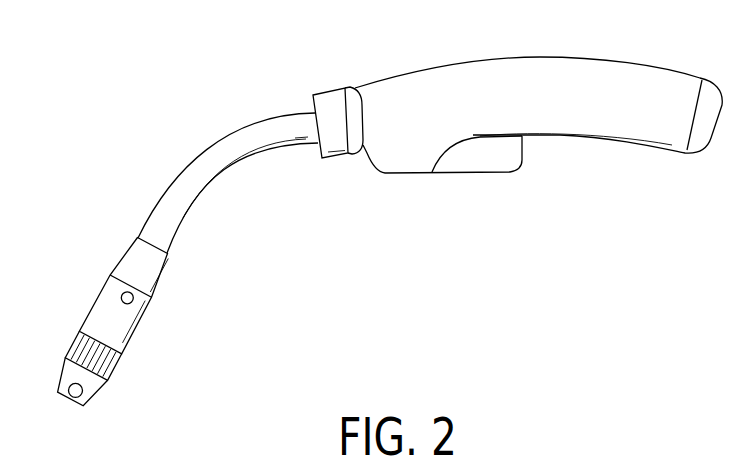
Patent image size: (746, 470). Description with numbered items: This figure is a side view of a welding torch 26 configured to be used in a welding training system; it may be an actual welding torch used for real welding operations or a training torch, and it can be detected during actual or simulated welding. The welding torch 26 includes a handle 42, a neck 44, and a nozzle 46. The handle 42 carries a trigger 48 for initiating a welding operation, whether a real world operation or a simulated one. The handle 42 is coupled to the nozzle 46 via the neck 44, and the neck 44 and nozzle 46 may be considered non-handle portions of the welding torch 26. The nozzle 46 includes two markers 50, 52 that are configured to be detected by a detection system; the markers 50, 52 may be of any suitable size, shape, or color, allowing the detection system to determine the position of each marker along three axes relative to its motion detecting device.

The welding torch 26 is at (106, 128).
The handle 42 is at (470, 77).
The neck 44 is at (173, 223).
The nozzle 46 is at (137, 327).
The trigger 48 is at (497, 155).
The marker 50 is at (127, 291).
The marker 52 is at (73, 397).